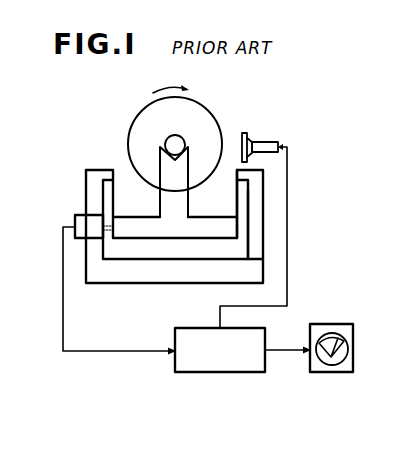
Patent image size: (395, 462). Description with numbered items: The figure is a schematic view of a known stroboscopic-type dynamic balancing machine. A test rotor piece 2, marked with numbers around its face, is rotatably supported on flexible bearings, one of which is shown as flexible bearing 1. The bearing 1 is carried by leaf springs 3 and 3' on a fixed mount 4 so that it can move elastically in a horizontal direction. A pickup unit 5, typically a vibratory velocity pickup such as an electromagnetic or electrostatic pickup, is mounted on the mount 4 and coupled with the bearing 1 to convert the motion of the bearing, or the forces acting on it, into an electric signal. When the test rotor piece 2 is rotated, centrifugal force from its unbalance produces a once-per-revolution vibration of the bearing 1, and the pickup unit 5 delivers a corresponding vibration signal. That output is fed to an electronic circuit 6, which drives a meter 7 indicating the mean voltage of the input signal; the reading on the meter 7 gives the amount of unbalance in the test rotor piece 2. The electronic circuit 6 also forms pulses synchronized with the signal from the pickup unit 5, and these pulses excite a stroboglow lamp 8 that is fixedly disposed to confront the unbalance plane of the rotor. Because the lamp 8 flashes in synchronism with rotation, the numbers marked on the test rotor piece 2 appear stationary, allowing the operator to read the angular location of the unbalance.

The flexible bearing 1 is at (165, 168).
The test rotor piece 2 is at (143, 118).
The leaf spring 3 is at (147, 226).
The leaf spring 3' is at (292, 204).
The fixed mount 4 is at (253, 222).
The pickup unit 5 is at (87, 228).
The electronic circuit 6 is at (212, 373).
The meter 7 is at (337, 372).
The stroboglow lamp 8 is at (258, 142).